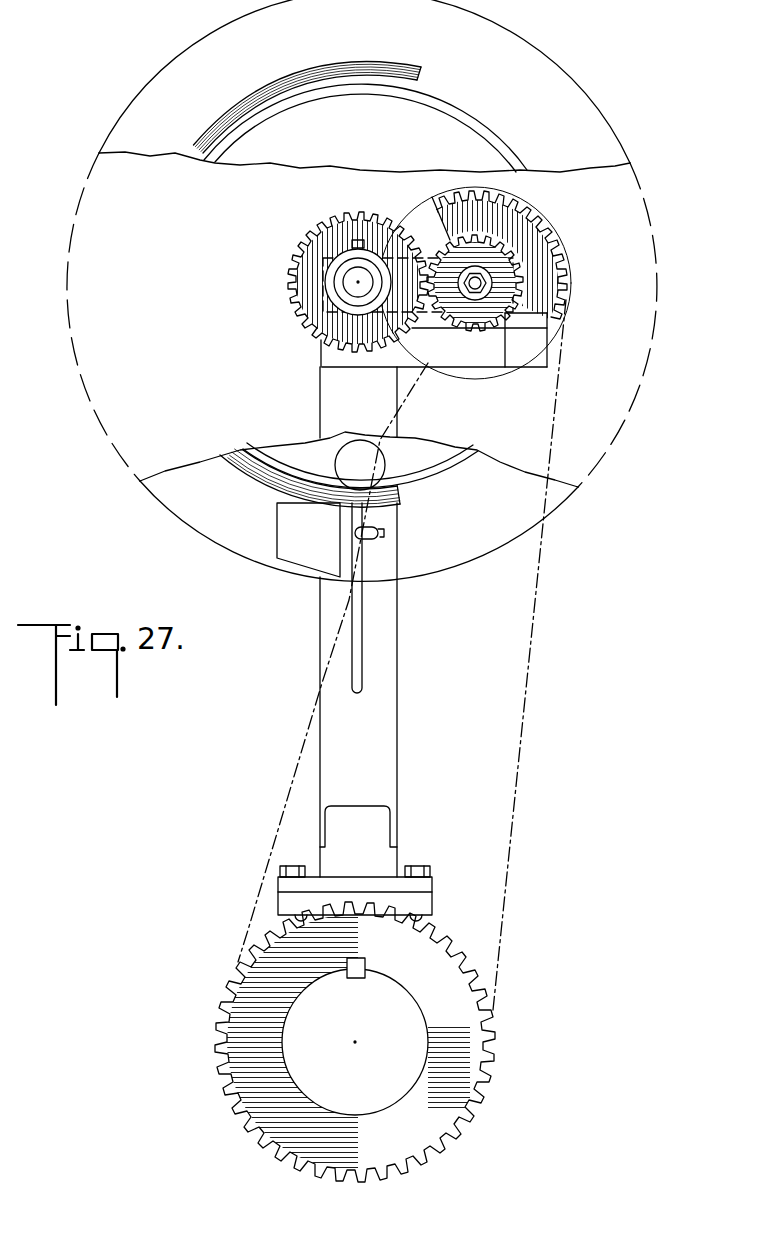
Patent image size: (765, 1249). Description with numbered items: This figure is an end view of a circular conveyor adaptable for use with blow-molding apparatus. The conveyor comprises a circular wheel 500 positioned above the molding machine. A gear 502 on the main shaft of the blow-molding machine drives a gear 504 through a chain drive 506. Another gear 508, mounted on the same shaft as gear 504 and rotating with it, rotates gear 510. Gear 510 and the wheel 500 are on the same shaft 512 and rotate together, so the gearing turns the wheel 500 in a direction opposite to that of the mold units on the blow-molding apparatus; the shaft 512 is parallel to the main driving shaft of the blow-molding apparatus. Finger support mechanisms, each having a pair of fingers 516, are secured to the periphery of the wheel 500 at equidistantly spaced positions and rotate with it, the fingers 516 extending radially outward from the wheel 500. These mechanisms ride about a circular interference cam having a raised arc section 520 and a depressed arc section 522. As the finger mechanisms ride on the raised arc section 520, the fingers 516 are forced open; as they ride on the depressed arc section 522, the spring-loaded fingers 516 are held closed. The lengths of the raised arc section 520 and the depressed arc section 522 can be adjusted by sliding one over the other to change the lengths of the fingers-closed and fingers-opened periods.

The circular wheel 500 is at (479, 546).
The gear 502 is at (458, 982).
The gear 504 is at (553, 285).
The chain drive 506 is at (532, 620).
The gear 508 is at (548, 248).
The gear 510 is at (312, 237).
The shaft 512 is at (356, 286).
The fingers 516 is at (358, 662).
The raised arc section 520 is at (247, 97).
The depressed arc section 522 is at (503, 137).